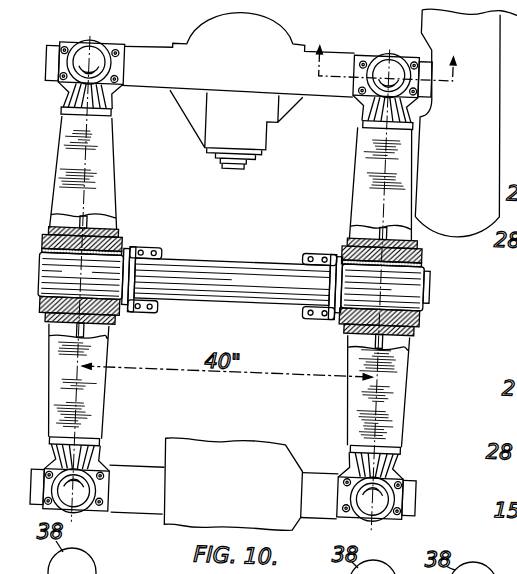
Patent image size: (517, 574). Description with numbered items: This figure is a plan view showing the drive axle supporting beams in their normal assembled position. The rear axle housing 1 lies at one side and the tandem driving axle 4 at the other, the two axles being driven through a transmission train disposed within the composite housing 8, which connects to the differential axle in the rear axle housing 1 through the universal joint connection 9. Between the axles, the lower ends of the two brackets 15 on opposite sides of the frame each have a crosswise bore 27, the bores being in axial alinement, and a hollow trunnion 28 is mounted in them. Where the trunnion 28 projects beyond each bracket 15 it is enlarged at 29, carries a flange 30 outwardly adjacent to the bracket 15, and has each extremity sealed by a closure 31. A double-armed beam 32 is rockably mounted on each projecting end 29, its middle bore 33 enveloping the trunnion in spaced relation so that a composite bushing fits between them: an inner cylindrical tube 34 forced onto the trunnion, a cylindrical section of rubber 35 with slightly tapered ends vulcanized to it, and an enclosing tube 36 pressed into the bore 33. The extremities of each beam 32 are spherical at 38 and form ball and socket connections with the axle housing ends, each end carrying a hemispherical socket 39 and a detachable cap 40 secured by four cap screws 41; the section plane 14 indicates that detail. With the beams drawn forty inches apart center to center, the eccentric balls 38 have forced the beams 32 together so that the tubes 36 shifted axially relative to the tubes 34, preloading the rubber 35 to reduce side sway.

The rear axle housing 1 is at (212, 26).
The driving axle 4 is at (331, 511).
The composite housing 8 is at (276, 437).
The universal joint connection 9 is at (226, 163).
The section line 14- 14 is at (389, 51).
The brackets 15 is at (167, 247).
The bore 27 is at (160, 306).
The hollow trunnion 28 is at (251, 255).
The trunnion enlargement 29 is at (55, 273).
The flange 30 is at (137, 311).
The closure 31 is at (438, 272).
The double-armed beam 32 is at (117, 156).
The middle bore 33 is at (115, 325).
The inner cylindrical tube 34 is at (133, 253).
The cylindrical section of rubber 35 is at (128, 243).
The enclosing tube 36 is at (118, 228).
The spherical beam end 38 is at (95, 37).
The hemispherical socket 39 is at (101, 47).
The detachable cap 40 is at (83, 40).
The cap screws 41 is at (119, 46).